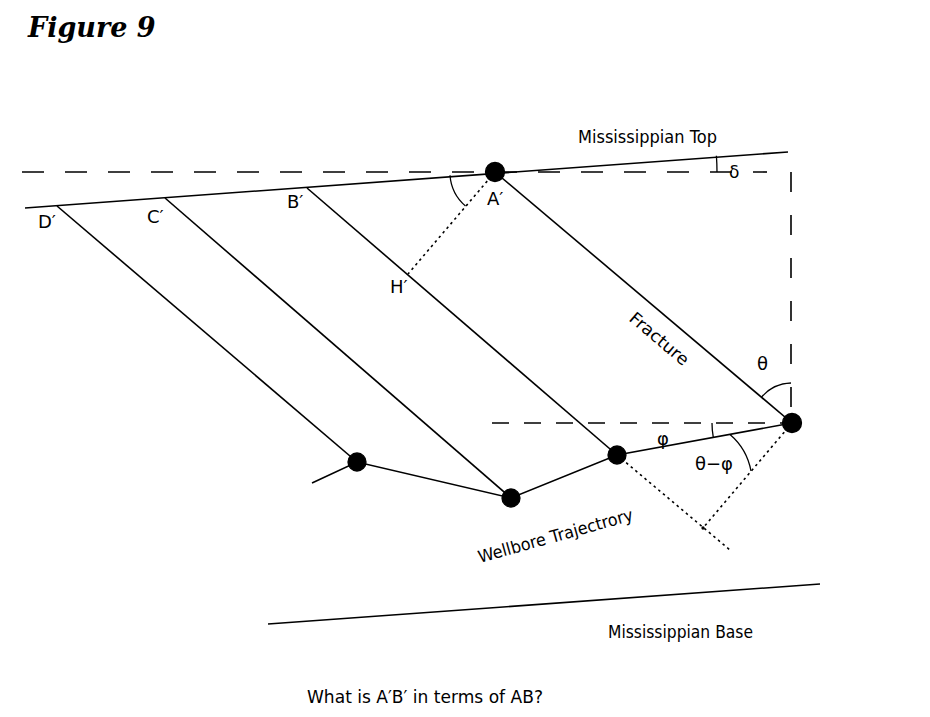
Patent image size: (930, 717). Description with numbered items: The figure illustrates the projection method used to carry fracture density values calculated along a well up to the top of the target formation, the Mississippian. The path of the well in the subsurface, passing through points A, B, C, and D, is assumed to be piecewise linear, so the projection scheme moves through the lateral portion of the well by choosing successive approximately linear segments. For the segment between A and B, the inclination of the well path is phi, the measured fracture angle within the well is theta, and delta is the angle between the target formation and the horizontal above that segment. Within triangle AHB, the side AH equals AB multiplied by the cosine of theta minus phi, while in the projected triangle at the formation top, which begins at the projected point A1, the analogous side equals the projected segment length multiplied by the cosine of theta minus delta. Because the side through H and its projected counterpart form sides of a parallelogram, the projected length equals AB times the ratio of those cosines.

The well path point A is at (797, 433).
The well path point B is at (632, 459).
The well path point C is at (522, 504).
The well path point D is at (390, 497).
The point H is at (692, 538).
The point A' at Mississippian top A1 is at (495, 172).